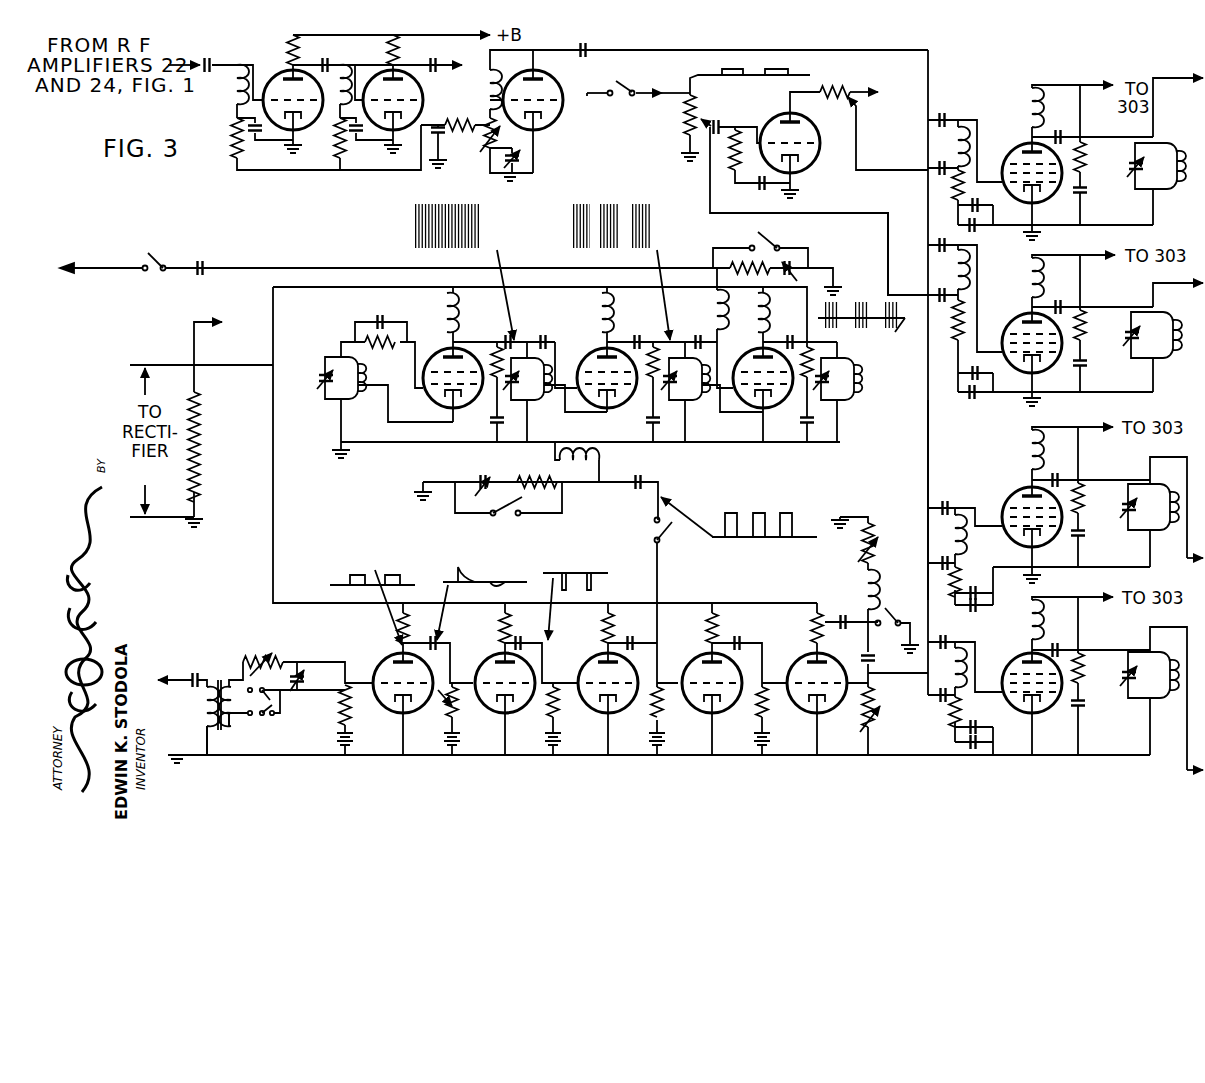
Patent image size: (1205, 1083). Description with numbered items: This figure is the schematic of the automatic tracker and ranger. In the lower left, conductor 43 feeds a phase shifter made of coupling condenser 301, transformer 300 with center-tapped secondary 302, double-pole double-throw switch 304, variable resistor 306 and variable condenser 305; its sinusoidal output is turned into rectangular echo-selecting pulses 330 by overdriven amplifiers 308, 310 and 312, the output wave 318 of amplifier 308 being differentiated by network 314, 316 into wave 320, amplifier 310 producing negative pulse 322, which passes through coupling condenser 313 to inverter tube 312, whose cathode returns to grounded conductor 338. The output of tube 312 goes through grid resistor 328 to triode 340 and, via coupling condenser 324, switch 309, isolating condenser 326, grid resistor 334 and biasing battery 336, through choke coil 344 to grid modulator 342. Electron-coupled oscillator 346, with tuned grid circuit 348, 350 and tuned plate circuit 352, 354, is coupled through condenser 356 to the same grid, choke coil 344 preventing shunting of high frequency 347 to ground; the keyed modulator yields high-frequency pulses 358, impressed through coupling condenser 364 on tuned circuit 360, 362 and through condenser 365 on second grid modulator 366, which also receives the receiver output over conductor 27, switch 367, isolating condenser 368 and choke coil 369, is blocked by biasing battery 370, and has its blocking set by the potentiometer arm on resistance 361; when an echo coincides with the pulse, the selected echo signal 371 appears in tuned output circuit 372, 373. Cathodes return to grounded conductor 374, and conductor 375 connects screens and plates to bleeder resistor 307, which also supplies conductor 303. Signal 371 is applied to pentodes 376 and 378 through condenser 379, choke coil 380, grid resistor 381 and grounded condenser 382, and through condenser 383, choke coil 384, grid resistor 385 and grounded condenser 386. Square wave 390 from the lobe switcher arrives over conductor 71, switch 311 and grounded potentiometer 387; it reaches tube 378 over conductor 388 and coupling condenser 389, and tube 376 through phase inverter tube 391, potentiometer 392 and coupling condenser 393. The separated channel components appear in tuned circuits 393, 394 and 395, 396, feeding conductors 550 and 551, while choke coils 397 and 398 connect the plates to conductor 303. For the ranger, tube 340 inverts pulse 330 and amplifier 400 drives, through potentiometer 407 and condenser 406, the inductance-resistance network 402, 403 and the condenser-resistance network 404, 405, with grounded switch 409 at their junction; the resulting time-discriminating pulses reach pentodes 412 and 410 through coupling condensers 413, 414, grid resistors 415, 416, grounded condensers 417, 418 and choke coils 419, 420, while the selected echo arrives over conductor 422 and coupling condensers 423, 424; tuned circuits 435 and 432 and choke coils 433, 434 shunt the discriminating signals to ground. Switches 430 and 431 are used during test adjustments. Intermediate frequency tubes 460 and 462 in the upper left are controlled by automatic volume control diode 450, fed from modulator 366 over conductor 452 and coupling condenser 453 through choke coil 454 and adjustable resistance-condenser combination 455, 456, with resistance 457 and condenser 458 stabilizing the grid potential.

The input line from FIG. 1 27 is at (104, 267).
The output line 43 is at (183, 675).
The line 71 is at (594, 97).
The transformer 300 is at (220, 673).
The capacitor 301 is at (192, 680).
The transformer secondary 302 is at (236, 722).
The line to rectifier 303 is at (203, 325).
The switch 304 is at (262, 720).
The resistor 305 is at (345, 695).
The variable resistor 306 is at (262, 657).
The resistor 307 is at (203, 448).
The tube 308 is at (413, 712).
The switch 309 is at (665, 524).
The tube 310 is at (517, 711).
The switch 311 is at (627, 86).
The tube 312 is at (617, 712).
The capacitor 313 is at (517, 639).
The capacitor 314 is at (431, 640).
The variable resistor 316 is at (457, 723).
The waveform 318 is at (372, 596).
The waveform 320 is at (460, 572).
The waveform 322 is at (560, 573).
The capacitor 324 is at (630, 637).
The capacitor 326 is at (647, 470).
The resistor 328 is at (663, 713).
The waveform 330 is at (762, 513).
The resistor 334 is at (527, 475).
The variable capacitor 336 is at (477, 475).
The ground line 338 is at (363, 755).
The tube 340 is at (710, 653).
The tube 342 is at (613, 347).
The coil 344 is at (603, 458).
The tube 346 is at (437, 350).
The waveform 347 is at (418, 213).
The variable capacitor 348 is at (325, 385).
The tuned circuit 350 is at (365, 374).
The capacitor 352 is at (517, 372).
The tuned circuit 354 is at (532, 390).
The capacitor 356 is at (543, 338).
The waveform 358 is at (600, 211).
The variable capacitor 360 is at (668, 390).
The resistor 361 is at (740, 265).
The tuned circuit 362 is at (695, 407).
The capacitor 364 is at (636, 338).
The coil 365 is at (696, 336).
The tube 366 is at (762, 347).
The switch 367 is at (156, 272).
The capacitor 368 is at (206, 265).
The coil 369 is at (723, 305).
The variable capacitor 370 is at (793, 262).
The waveform 371 is at (888, 312).
The capacitor 372 is at (824, 424).
The tuned circuit 373 is at (858, 387).
The ground line 374 is at (381, 443).
The enclosure 375 is at (350, 288).
The tube 376 is at (1026, 142).
The tube 378 is at (1020, 318).
The capacitor 379 is at (943, 113).
The coil 380 is at (968, 152).
The resistor 381 is at (956, 194).
The capacitor 382 is at (977, 213).
The capacitor / line 383 is at (873, 268).
The coil 384 is at (970, 270).
The resistor 385 is at (960, 333).
The capacitor 386 is at (978, 394).
The potentiometer 387 is at (686, 127).
The capacitor 388 is at (708, 183).
The capacitor 389 is at (938, 293).
The waveform 390 is at (727, 70).
The tube 391 is at (767, 116).
The potentiometer 392 is at (832, 91).
The capacitor 393 is at (937, 166).
The tuned circuit 394 is at (1172, 190).
The variable capacitor 395 is at (1127, 340).
The tuned circuit 396 is at (1172, 355).
The coil 397 is at (1040, 90).
The coil 398 is at (1054, 276).
The tube 400 is at (810, 652).
The coil 402 is at (878, 586).
The variable resistor 403 is at (874, 540).
The capacitor 404 is at (876, 658).
The variable resistor 405 is at (874, 696).
The capacitor 406 is at (850, 609).
The variable resistor 407 is at (862, 653).
The switch 409 is at (881, 614).
The tube 410 is at (1032, 713).
The tube 412 is at (1015, 487).
The capacitor 413 is at (940, 558).
The capacitor 414 is at (946, 700).
The resistor 415 is at (974, 573).
The resistor 416 is at (972, 712).
The capacitor 417 is at (982, 604).
The capacitor 418 is at (969, 734).
The coil 419 is at (978, 535).
The coil 420 is at (966, 654).
The line 422 is at (925, 462).
The capacitor 423 is at (950, 503).
The capacitor 424 is at (943, 638).
The switch 430 is at (760, 235).
The switch 431 is at (508, 516).
The tuned circuit 432 is at (1148, 694).
The coil 433 is at (1036, 463).
The coil 434 is at (1036, 633).
The tuned circuit 435 is at (1148, 525).
The tube 450 is at (566, 92).
The line 452 is at (700, 50).
The capacitor 453 is at (590, 49).
The coil 454 is at (488, 70).
The variable resistor 455 is at (516, 130).
The variable capacitor 456 is at (509, 160).
The resistor 457 is at (476, 121).
The capacitor 458 is at (443, 133).
The tube 460 is at (285, 74).
The tube 462 is at (386, 74).
The output line 550 is at (1152, 120).
The output line 551 is at (1153, 288).